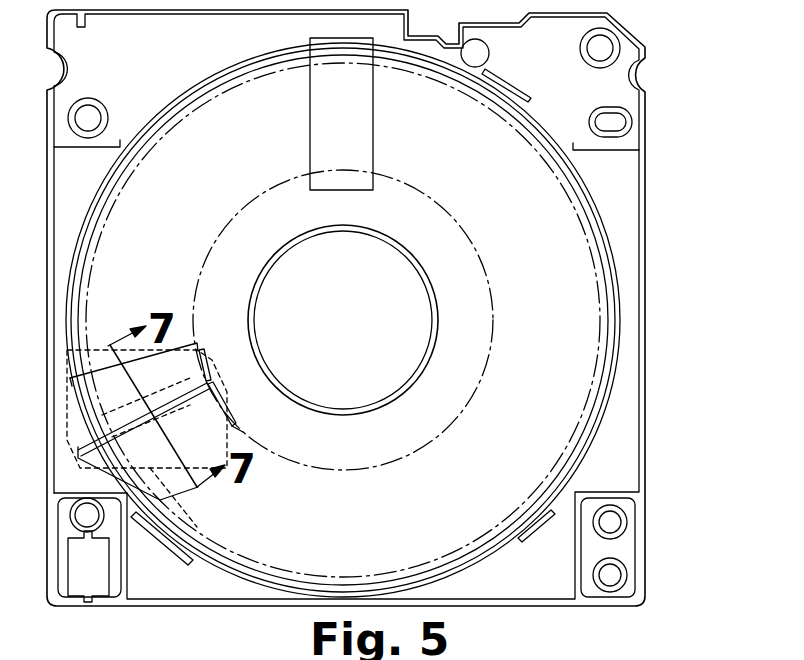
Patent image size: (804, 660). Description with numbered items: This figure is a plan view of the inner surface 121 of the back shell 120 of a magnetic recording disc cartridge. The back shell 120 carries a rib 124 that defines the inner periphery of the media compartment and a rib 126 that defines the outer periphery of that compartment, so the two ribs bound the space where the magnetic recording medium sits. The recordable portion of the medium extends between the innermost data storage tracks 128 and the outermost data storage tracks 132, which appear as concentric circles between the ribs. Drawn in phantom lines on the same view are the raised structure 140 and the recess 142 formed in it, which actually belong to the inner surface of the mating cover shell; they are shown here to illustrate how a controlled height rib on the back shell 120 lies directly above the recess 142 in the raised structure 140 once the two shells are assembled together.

The back shell 120 is at (648, 153).
The inner surface 121 is at (490, 168).
The rib 124 is at (432, 282).
The rib 126 is at (620, 303).
The innermost data storage tracks 128 is at (493, 300).
The outermost data storage tracks 132 is at (576, 432).
The raised structure 140 is at (151, 435).
The recess 142 is at (236, 428).